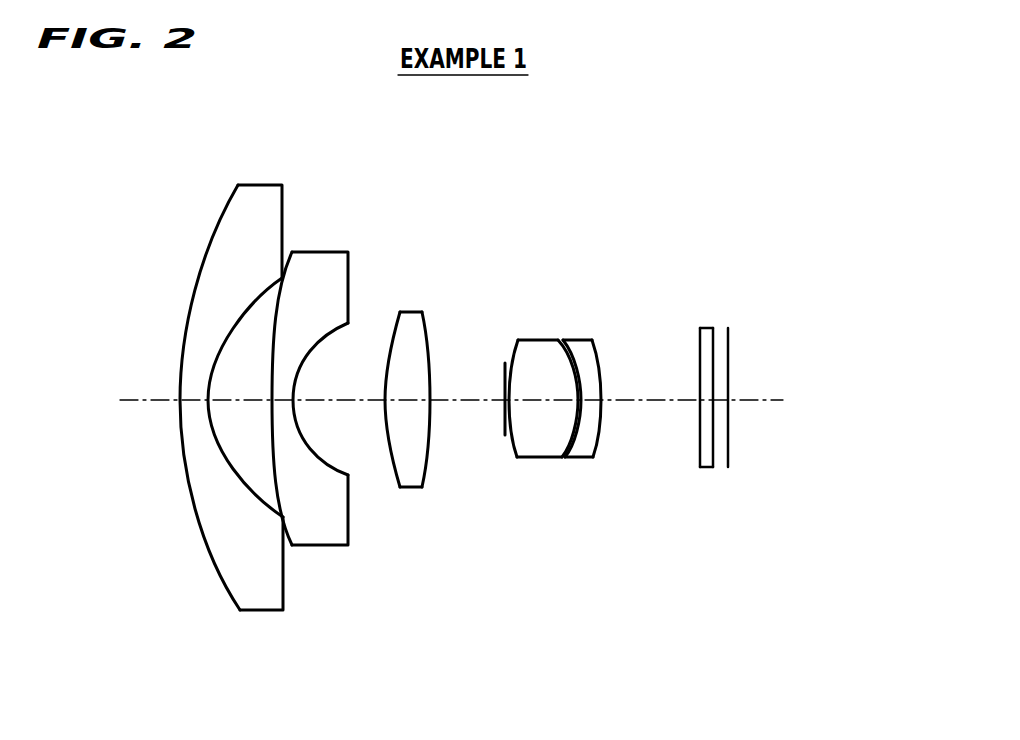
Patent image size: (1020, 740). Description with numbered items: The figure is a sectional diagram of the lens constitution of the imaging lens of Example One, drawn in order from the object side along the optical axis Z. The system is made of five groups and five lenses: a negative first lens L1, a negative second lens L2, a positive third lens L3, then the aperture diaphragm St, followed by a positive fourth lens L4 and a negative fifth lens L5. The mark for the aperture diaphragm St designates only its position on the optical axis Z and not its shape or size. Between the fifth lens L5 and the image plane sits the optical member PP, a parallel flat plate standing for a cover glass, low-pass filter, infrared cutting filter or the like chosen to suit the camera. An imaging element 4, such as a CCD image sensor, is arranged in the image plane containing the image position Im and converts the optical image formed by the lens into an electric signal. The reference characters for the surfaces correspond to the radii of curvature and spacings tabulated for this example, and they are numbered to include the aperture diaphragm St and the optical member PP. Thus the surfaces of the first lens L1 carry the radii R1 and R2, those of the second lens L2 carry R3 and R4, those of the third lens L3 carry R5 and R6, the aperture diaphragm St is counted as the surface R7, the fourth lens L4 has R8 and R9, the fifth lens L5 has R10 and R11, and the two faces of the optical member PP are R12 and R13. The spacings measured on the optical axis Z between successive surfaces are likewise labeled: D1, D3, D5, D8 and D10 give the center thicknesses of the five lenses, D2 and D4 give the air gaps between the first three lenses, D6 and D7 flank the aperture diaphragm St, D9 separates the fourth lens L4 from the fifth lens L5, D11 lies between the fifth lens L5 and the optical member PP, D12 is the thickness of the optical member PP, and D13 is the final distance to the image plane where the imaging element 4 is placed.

The optical axis Z is at (140, 398).
The first lens L1 is at (218, 367).
The second lens L2 is at (321, 334).
The third lens L3 is at (410, 305).
The fourth lens L4 is at (539, 290).
The fifth lens L5 is at (611, 290).
The aperture diaphragm St is at (484, 323).
The optical member PP is at (700, 335).
The imaging element 4 is at (750, 362).
The image position Im is at (730, 400).
The radius of curvature of the first surface R1 is at (192, 297).
The radius of curvature of the second surface R2 is at (235, 320).
The radius of curvature of the third surface R3 is at (290, 295).
The radius of curvature of the fourth surface R4 is at (332, 318).
The radius of curvature of the fifth surface R5 is at (398, 325).
The radius of curvature of the sixth surface R6 is at (424, 325).
The radius of curvature of the seventh surface R7 is at (505, 363).
The radius of curvature of the eighth surface R8 is at (537, 343).
The radius of curvature of the ninth surface R9 is at (565, 363).
The radius of curvature of the tenth surface R10 is at (592, 366).
The radius of curvature of the eleventh surface R11 is at (603, 372).
The radius of curvature of the twelfth surface R12 is at (700, 335).
The radius of curvature of the thirteenth surface R13 is at (718, 340).
The first surface spacing D1 is at (196, 406).
The second surface spacing D2 is at (243, 400).
The third surface spacing D3 is at (282, 403).
The fourth surface spacing D4 is at (346, 400).
The fifth surface spacing D5 is at (408, 402).
The sixth surface spacing D6 is at (477, 400).
The seventh surface spacing D7 is at (514, 400).
The eighth surface spacing D8 is at (540, 400).
The ninth surface spacing D9 is at (577, 445).
The tenth surface spacing D10 is at (588, 410).
The eleventh surface spacing D11 is at (642, 400).
The twelfth surface spacing D12 is at (703, 407).
The thirteenth surface spacing D13 is at (723, 407).